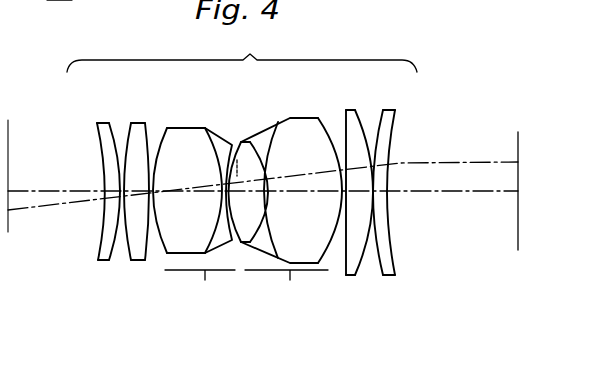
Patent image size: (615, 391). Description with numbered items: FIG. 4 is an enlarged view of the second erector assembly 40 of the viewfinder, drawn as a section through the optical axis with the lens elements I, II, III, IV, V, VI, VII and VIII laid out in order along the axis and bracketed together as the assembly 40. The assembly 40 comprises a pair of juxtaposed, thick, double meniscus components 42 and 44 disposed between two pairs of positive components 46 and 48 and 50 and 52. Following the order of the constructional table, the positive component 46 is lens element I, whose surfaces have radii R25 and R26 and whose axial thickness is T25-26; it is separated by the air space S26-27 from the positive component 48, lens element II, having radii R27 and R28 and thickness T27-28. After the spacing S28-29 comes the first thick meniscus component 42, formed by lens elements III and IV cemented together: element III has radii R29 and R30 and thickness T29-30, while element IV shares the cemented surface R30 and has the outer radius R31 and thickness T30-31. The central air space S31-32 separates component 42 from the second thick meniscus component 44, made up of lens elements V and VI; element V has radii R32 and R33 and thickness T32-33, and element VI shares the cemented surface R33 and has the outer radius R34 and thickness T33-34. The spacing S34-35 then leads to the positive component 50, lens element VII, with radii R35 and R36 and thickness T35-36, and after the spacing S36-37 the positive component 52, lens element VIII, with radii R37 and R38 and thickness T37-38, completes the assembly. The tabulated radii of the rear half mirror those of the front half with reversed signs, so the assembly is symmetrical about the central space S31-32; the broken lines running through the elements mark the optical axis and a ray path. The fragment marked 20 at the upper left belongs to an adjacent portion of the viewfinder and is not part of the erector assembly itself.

The zoom lens system (adjacent figure fragment) 20 is at (48, 0).
The second erector assembly 40 is at (242, 53).
The thick double meniscus component 42 is at (198, 199).
The thick double meniscus component 44 is at (286, 199).
The positive component 46 is at (74, 199).
The positive component 48 is at (105, 195).
The positive component 50 is at (381, 195).
The positive component 52 is at (403, 205).
The radius of curvature R25 is at (95, 127).
The radius of curvature R26 is at (108, 124).
The radius of curvature R27 is at (131, 125).
The radius of curvature R28 is at (151, 124).
The radius of curvature R29 is at (161, 128).
The radius of curvature R30 is at (208, 128).
The radius of curvature R31 is at (233, 145).
The radius of curvature R32 is at (243, 142).
The radius of curvature R33 is at (280, 110).
The radius of curvature R34 is at (322, 128).
The radius of curvature R35 is at (346, 118).
The radius of curvature R36 is at (364, 110).
The radius of curvature R37 is at (385, 110).
The radius of curvature R38 is at (397, 119).
The axial thickness T25-26 is at (110, 187).
The axial thickness T27-28 is at (133, 187).
The axial thickness T29-30 is at (192, 192).
The axial thickness T30-31 is at (223, 188).
The axial thickness T32-33 is at (264, 197).
The axial thickness T33-34 is at (282, 190).
The axial thickness T35-36 is at (350, 192).
The axial thickness T37-38 is at (380, 192).
The axial spacing S26-27 is at (122, 195).
The axial spacing S28-29 is at (149, 195).
The axial spacing S31-32 is at (245, 207).
The axial spacing S34-35 is at (342, 192).
The axial spacing S36-37 is at (373, 195).
The lens element I is at (107, 260).
The lens element II is at (144, 260).
The lens element III is at (165, 270).
The lens element IV is at (235, 270).
The lens element V is at (245, 270).
The lens element VI is at (328, 270).
The lens element VII is at (343, 276).
The lens element VIII is at (390, 276).